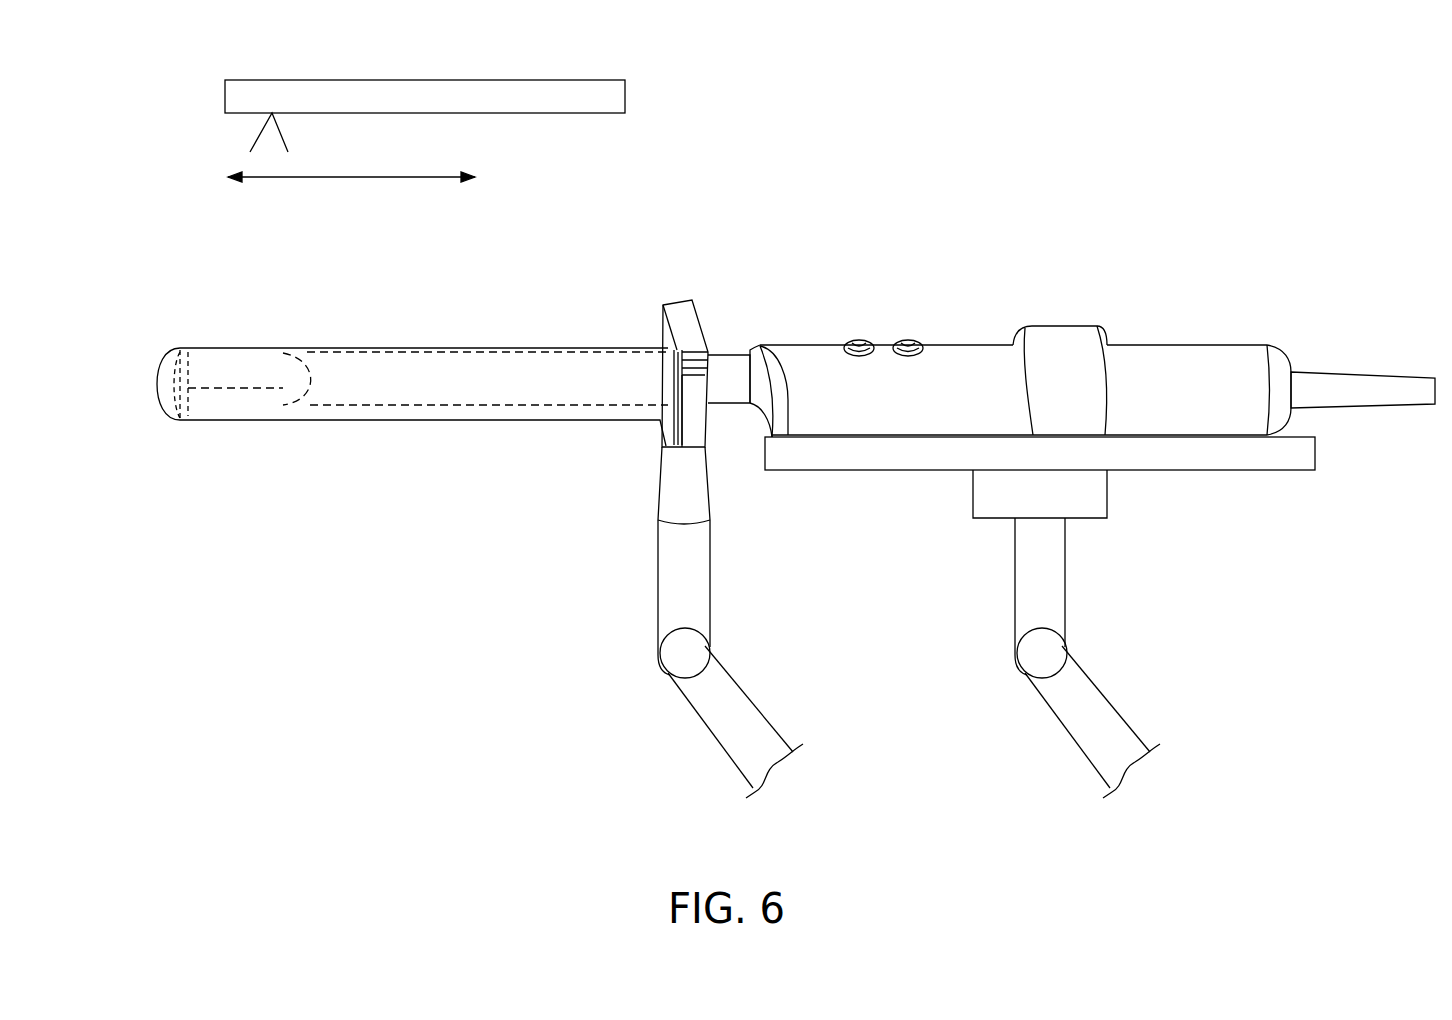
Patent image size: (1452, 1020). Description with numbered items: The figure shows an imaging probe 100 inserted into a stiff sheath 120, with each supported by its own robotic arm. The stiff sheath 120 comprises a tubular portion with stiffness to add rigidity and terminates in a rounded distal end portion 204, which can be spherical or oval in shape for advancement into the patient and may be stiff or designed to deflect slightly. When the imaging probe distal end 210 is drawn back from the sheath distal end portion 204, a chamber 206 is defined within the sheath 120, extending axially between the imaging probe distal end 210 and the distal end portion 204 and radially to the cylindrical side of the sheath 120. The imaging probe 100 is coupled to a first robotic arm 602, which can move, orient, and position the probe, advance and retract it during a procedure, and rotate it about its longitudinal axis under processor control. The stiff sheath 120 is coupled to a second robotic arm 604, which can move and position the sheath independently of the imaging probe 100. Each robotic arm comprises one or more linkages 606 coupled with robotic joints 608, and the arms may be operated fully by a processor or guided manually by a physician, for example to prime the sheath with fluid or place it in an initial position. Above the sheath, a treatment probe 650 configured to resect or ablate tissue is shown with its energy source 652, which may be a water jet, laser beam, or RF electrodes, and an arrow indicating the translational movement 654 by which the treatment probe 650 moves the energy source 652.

The imaging probe 100 is at (383, 342).
The stiff sheath 120 is at (263, 347).
The distal end portion 204 is at (155, 385).
The chamber 206 is at (200, 360).
The imaging probe distal end 210 is at (280, 377).
The first robotic arm 602 is at (1076, 585).
The second robotic arm 604 is at (728, 586).
The linkages 606 is at (680, 597).
The robotic joints 608 is at (693, 650).
The treatment probe 650 is at (262, 80).
The energy source 652 is at (252, 142).
The translational movement 654 is at (406, 180).